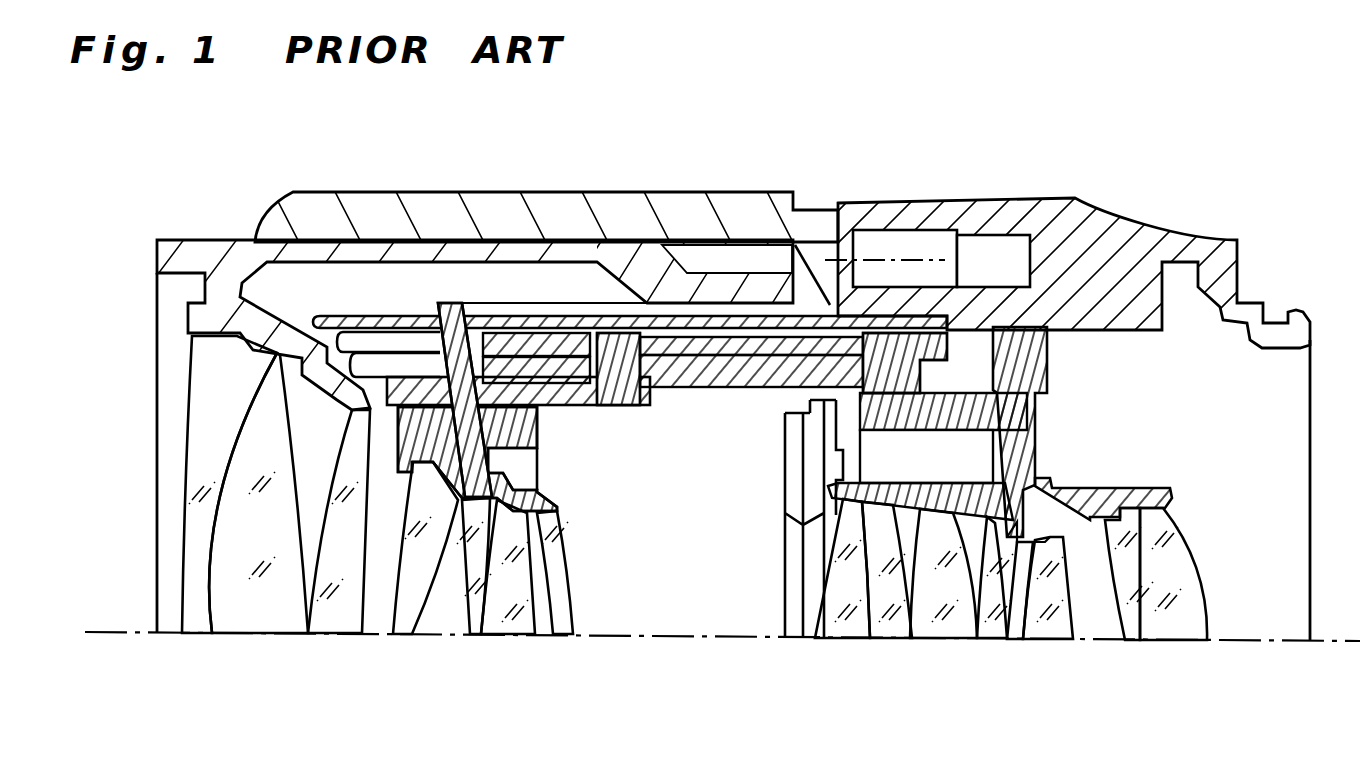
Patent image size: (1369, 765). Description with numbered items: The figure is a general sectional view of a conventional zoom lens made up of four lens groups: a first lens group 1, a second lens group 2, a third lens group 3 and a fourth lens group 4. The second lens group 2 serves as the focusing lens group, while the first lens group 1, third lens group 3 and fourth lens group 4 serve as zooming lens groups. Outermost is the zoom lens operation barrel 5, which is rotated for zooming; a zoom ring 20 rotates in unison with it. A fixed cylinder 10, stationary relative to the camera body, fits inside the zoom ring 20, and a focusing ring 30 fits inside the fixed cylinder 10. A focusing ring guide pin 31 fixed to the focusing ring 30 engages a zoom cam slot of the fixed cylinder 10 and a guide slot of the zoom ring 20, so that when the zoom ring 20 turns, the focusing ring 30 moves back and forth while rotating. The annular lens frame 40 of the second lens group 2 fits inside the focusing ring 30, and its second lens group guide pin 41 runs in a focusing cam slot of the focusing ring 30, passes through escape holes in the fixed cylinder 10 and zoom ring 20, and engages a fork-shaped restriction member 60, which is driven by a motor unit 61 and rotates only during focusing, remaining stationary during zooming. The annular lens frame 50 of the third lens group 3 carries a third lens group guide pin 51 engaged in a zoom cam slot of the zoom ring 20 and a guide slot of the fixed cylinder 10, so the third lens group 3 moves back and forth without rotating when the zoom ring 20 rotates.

The first lens group 1 is at (177, 643).
The second lens group 2 is at (393, 645).
The third lens group 3 is at (1077, 650).
The fourth lens group 4 is at (1117, 650).
The zoom lens operation barrel 5 is at (545, 208).
The fixed cylinder 10 is at (697, 378).
The zoom ring 20 is at (743, 350).
The focusing ring 30 is at (590, 384).
The focusing ring guide pin 31 is at (613, 367).
The annular lens frame 40 is at (537, 440).
The second lens group guide pin 41 is at (455, 303).
The annular lens frame 50 is at (940, 417).
The third lens group guide pin 51 is at (887, 380).
The restriction member 60 is at (537, 317).
The motor unit 61 is at (947, 256).